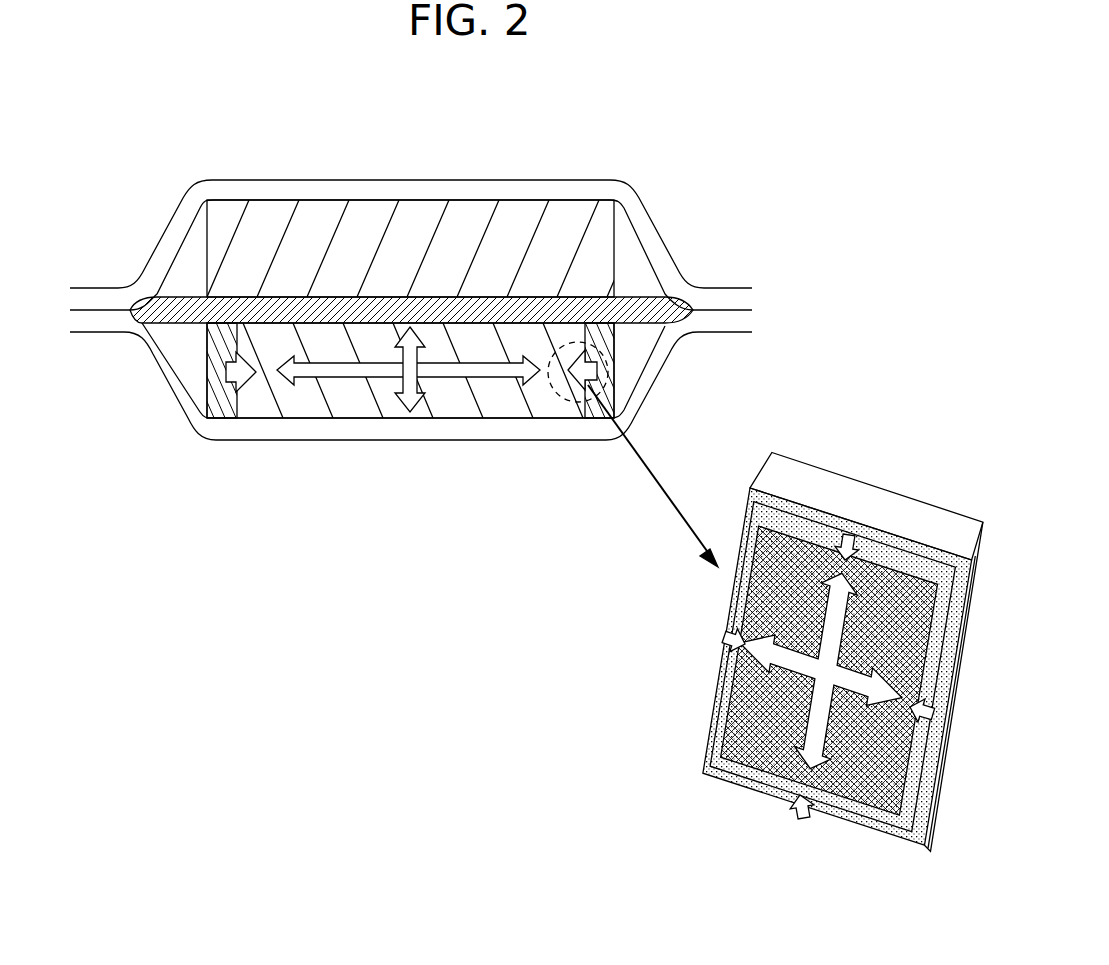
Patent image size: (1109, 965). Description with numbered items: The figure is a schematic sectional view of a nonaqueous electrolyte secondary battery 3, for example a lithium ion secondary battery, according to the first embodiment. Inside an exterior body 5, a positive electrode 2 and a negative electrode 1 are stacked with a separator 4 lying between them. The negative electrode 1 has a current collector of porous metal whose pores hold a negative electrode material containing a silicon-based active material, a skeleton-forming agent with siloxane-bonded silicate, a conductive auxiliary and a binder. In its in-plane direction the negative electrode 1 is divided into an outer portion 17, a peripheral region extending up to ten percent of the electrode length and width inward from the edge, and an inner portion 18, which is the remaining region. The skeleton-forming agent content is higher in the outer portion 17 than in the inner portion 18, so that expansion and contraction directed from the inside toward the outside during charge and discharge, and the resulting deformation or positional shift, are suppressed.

The negative electrode 1 is at (446, 410).
The positive electrode 2 is at (404, 226).
The nonaqueous electrolyte secondary battery 3 is at (526, 480).
The separator 4 is at (641, 302).
The exterior body 5 is at (307, 432).
The outer portion of negative electrode in in-plane direction 17 is at (221, 410).
The inner portion of negative electrode in in-plane direction 18 is at (762, 757).